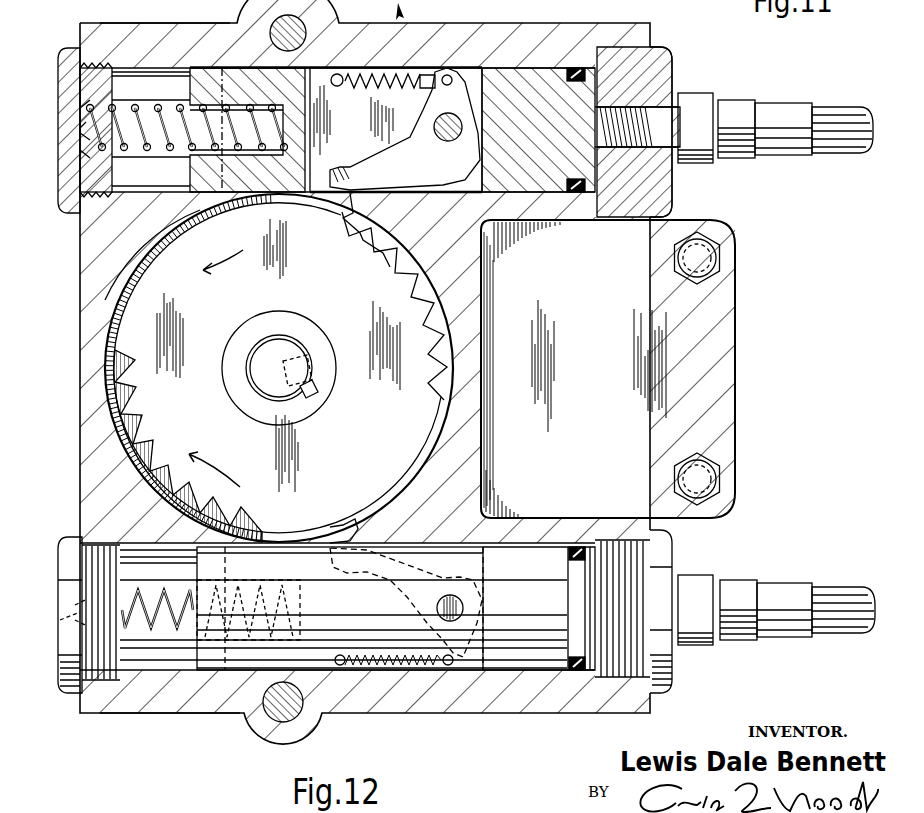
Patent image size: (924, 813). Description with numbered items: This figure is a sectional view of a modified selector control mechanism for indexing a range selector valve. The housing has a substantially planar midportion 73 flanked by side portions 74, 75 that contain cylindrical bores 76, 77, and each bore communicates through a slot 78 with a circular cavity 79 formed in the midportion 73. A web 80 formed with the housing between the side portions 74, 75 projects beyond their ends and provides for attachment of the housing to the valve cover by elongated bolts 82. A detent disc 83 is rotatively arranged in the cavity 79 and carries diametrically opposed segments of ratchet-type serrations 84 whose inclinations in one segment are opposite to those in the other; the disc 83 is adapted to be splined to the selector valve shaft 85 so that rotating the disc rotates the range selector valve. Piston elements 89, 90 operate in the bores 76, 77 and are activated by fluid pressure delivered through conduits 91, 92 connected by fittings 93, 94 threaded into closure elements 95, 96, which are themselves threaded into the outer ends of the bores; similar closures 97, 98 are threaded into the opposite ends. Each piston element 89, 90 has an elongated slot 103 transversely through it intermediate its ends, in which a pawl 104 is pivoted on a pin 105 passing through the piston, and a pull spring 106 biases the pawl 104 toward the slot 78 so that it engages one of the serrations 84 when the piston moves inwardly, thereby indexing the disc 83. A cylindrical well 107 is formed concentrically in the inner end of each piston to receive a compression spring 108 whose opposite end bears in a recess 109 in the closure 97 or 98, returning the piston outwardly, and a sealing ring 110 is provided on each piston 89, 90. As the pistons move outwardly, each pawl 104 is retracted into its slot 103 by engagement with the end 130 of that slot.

The midportion 73 is at (88, 287).
The side portion 74 is at (214, 23).
The side portion 75 is at (167, 713).
The cylindrical bore 76 is at (157, 67).
The cylindrical bore 77 is at (143, 672).
The slot 78 is at (240, 200).
The circular cavity 79 is at (108, 356).
The web 80 is at (720, 368).
The elongated bolts 82 is at (710, 258).
The detent disc 83 is at (236, 306).
The ratchet-type serrations 84 is at (390, 263).
The selector valve shaft 85 is at (300, 343).
The piston element 89 is at (507, 73).
The piston element 90 is at (533, 657).
The conduit 91 is at (843, 87).
The conduit 92 is at (835, 595).
The fitting 93 is at (710, 100).
The fitting 94 is at (697, 583).
The closure element 95 is at (673, 53).
The closure element 96 is at (670, 680).
The closure 97 is at (58, 87).
The closure 98 is at (60, 580).
The elongated slot 103 is at (313, 75).
The pawl 104 is at (470, 63).
The pin 105 is at (453, 138).
The pull spring 106 is at (387, 70).
The cylindrical well 107 is at (262, 158).
The compression spring 108 is at (190, 143).
The recess 109 is at (80, 133).
The sealing ring 110 is at (580, 68).
The end 130 is at (350, 193).